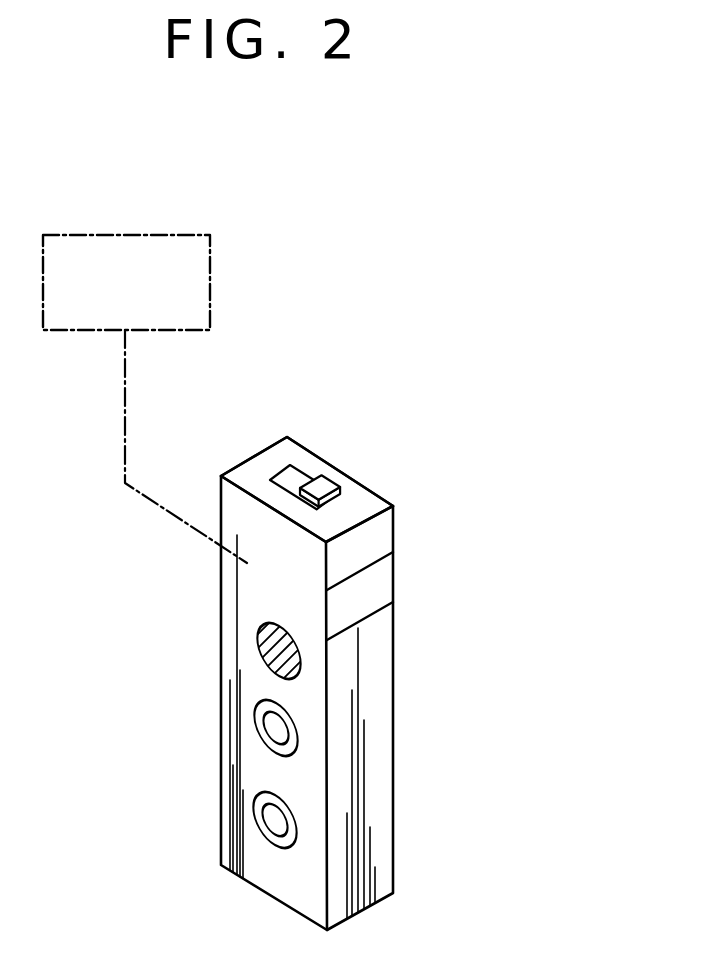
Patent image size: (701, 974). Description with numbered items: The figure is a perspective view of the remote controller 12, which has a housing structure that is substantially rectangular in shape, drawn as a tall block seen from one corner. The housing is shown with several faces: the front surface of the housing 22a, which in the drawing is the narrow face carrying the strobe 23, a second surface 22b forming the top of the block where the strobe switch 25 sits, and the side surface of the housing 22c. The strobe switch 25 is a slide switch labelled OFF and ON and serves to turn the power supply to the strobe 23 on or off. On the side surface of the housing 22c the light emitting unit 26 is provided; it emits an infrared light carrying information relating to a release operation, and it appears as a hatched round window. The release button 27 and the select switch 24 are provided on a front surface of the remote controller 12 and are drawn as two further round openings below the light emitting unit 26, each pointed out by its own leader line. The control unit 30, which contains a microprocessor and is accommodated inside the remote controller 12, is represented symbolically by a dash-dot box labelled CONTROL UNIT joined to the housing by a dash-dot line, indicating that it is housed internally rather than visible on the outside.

The remote controller 12 is at (363, 425).
The front surface of the housing 22a is at (375, 690).
The top face of casing 22b is at (302, 457).
The side surface of the housing 22c is at (233, 820).
The strobe 23 is at (383, 585).
The select switch 24 is at (274, 728).
The strobe switch 25 is at (343, 481).
The light emitting unit 26 is at (262, 655).
The release button 27 is at (266, 836).
The control unit 30 is at (210, 297).